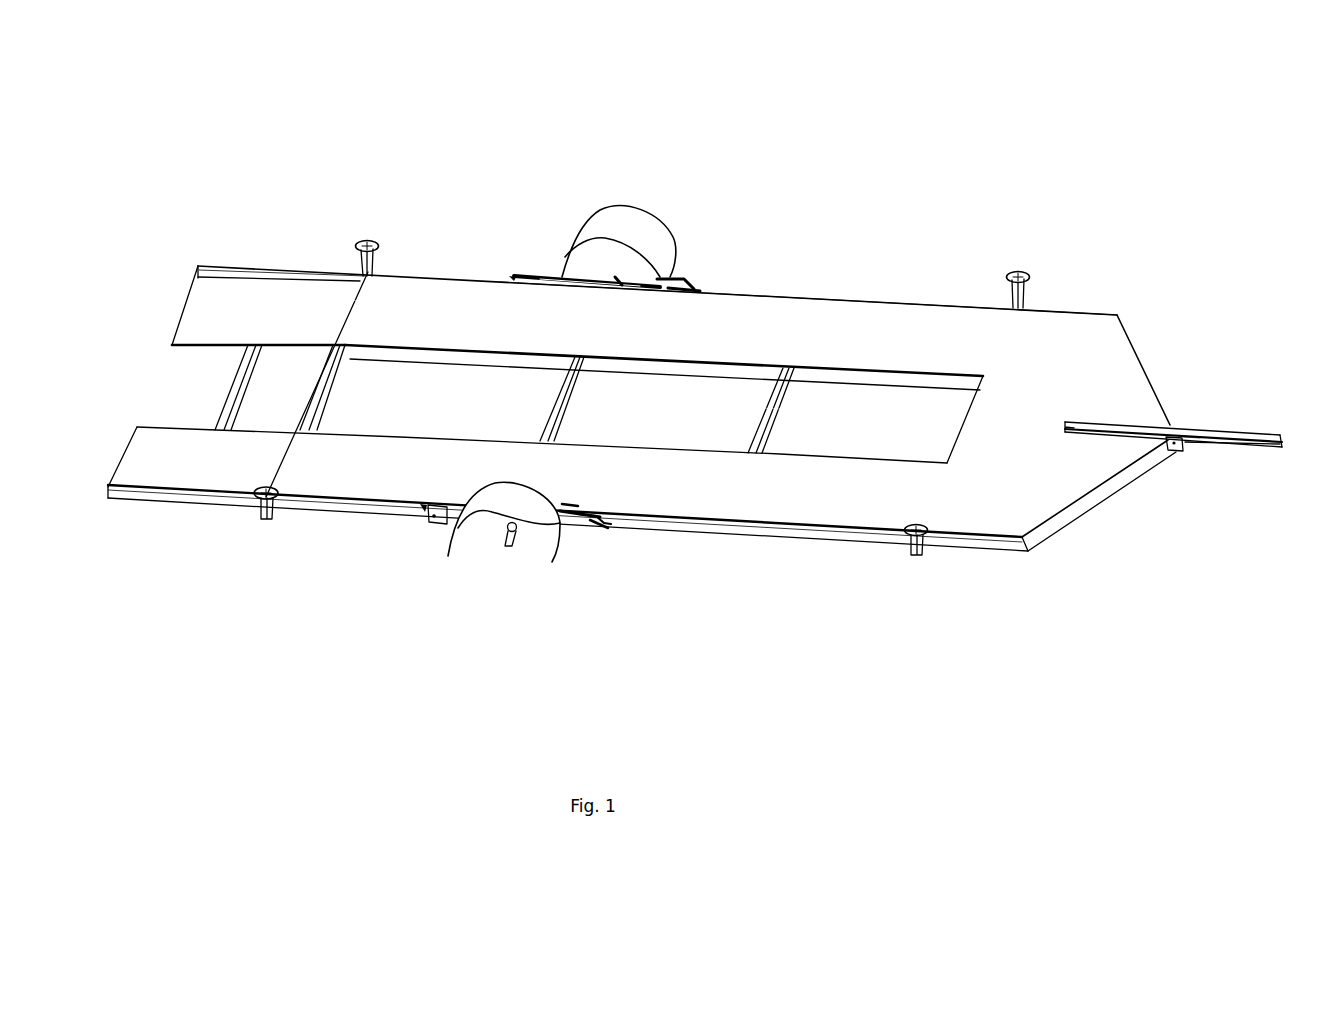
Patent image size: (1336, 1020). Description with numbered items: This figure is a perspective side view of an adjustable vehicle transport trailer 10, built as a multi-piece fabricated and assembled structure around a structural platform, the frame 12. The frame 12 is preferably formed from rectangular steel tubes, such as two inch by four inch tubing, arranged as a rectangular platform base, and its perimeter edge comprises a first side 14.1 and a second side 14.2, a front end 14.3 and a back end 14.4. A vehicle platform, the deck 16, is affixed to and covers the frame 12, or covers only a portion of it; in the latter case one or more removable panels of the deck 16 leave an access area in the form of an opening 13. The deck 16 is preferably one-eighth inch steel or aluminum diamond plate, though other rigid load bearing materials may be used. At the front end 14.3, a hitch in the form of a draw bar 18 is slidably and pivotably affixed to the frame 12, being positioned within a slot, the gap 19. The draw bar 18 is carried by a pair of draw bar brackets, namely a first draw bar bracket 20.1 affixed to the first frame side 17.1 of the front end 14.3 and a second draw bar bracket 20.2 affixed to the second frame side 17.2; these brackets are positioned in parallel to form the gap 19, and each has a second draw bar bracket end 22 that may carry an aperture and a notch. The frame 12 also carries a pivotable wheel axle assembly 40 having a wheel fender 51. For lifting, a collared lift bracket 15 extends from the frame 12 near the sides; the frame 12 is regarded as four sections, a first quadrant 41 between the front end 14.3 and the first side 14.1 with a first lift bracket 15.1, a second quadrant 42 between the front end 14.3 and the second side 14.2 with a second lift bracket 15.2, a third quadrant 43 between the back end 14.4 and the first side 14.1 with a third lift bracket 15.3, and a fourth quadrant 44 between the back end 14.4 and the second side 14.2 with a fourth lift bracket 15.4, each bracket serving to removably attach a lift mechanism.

The adjustable vehicle transport trailer 10 is at (852, 168).
The frame 12 is at (446, 355).
The opening 13 is at (698, 410).
The first side 14.1 is at (678, 528).
The second side 14.2 is at (905, 303).
The front end 14.3 is at (1090, 490).
The back end 14.4 is at (212, 270).
The collared lift bracket 15 is at (700, 387).
The first lift bracket 15.1 is at (930, 570).
The second lift bracket 15.2 is at (1034, 257).
The third lift bracket 15.3 is at (268, 550).
The fourth lift bracket 15.4 is at (369, 212).
The deck 16 is at (957, 338).
The first frame side 17.1 is at (568, 568).
The second frame side 17.2 is at (808, 266).
The draw bar 18 is at (1247, 419).
The gap 19 is at (1117, 413).
The first draw bar bracket 20.1 is at (1200, 452).
The second draw bar bracket 20.2 is at (1203, 432).
The second draw bar bracket end 22 is at (1242, 453).
The pivotable wheel axle assembly 40 is at (688, 228).
The first quadrant 41 is at (848, 507).
The second quadrant 42 is at (1094, 372).
The third quadrant 43 is at (342, 458).
The fourth quadrant 44 is at (396, 298).
The wheel fender 51 is at (602, 223).